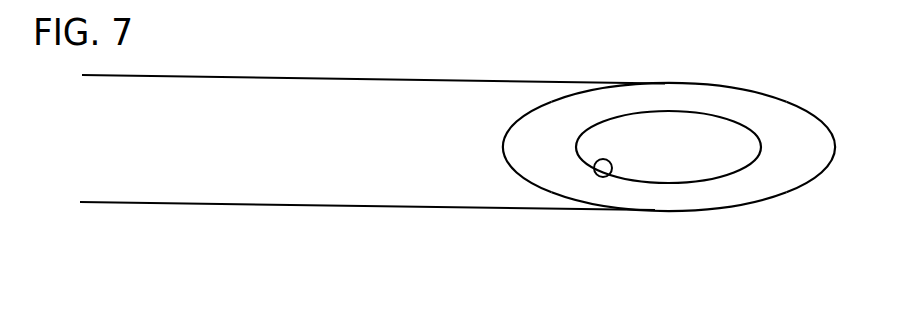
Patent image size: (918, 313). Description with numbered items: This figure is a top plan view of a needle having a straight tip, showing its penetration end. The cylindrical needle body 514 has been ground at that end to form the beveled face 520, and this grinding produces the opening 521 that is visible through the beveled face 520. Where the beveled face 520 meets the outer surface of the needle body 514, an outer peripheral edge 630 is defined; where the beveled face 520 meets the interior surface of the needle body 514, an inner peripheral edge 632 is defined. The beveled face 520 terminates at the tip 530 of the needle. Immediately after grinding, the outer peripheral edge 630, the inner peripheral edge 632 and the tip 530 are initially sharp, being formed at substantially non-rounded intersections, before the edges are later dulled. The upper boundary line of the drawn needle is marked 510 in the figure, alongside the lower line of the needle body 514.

The elongate member upper edge 510 is at (272, 77).
The needle body 514 is at (402, 205).
The beveled face 520 is at (652, 97).
The opening 521 is at (691, 167).
The tip 530 is at (837, 147).
The outer peripheral edge 630 is at (503, 150).
The inner peripheral edge 632 is at (609, 176).